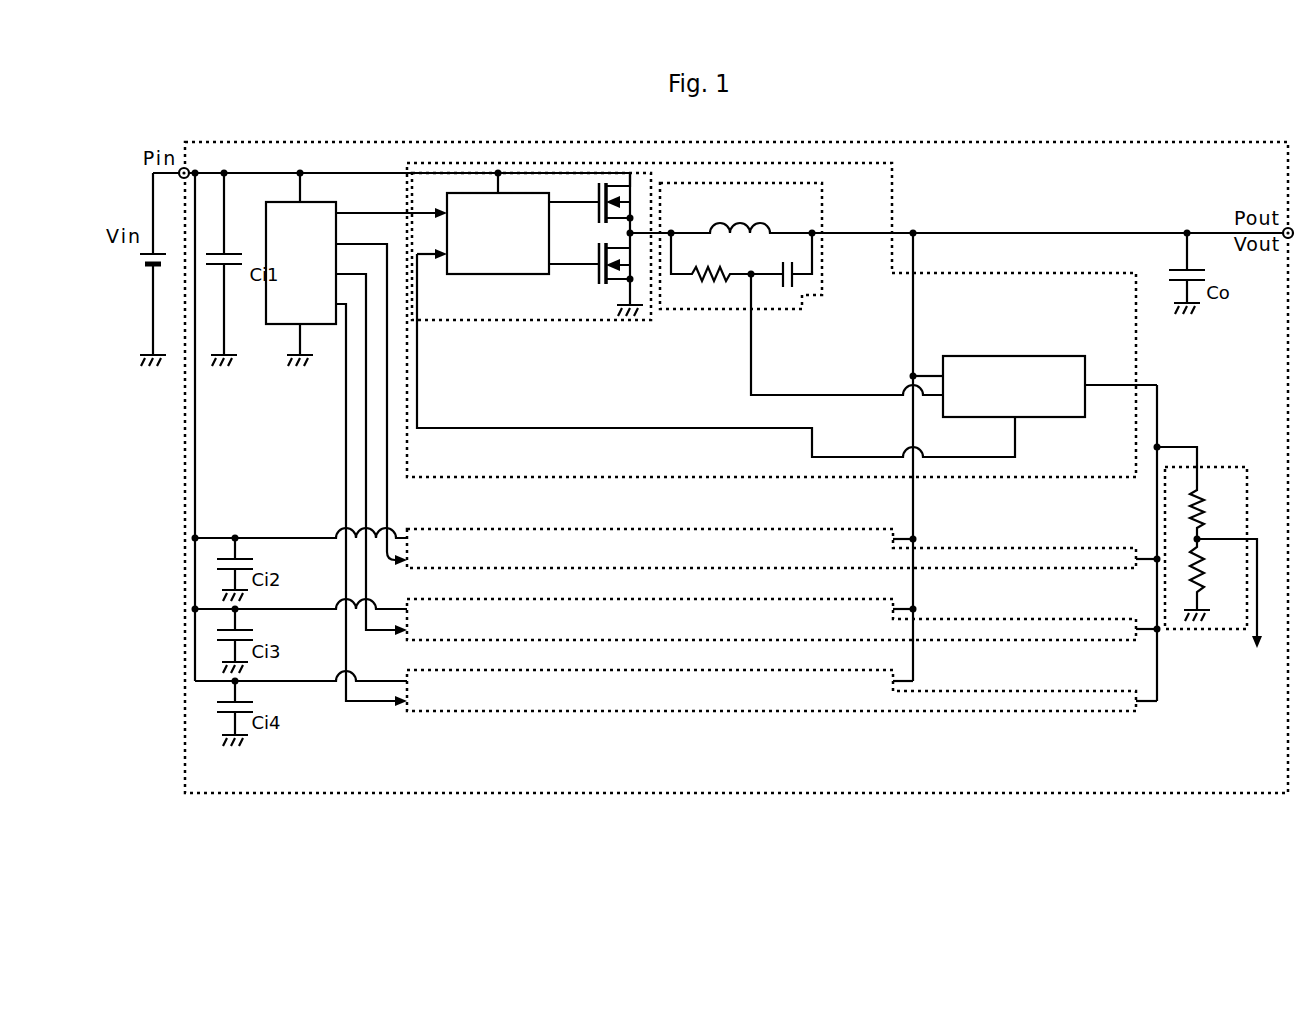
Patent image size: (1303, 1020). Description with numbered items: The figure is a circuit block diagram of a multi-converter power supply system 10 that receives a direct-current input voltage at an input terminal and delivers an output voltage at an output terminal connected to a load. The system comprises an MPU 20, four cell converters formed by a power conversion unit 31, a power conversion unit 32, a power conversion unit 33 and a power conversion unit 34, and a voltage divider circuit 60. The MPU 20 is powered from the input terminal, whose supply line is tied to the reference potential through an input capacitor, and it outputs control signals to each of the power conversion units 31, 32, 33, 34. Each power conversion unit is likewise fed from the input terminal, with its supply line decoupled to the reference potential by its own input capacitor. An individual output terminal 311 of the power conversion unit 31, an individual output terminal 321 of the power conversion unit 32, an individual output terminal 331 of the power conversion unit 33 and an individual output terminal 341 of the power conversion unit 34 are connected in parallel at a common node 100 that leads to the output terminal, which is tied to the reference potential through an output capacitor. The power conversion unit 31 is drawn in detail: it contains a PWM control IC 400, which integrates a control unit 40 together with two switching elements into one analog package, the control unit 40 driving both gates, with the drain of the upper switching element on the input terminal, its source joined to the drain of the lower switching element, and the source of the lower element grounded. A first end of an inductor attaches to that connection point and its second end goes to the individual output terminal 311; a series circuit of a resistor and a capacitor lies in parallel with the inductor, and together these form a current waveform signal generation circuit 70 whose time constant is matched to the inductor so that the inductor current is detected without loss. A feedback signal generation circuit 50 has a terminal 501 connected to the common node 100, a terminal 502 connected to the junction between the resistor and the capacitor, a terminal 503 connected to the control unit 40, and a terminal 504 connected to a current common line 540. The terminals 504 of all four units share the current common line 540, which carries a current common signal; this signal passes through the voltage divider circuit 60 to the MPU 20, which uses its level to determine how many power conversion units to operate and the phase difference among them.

The multi-converter power supply system 10 is at (1248, 142).
The MPU 20 is at (278, 324).
The power conversion unit 31 is at (1104, 273).
The power conversion unit 32 is at (782, 534).
The power conversion unit 33 is at (782, 606).
The power conversion unit 34 is at (782, 677).
The control unit 40 is at (530, 274).
The PWM control IC 400 is at (531, 268).
The current waveform signal generation circuit 70 is at (683, 310).
The common node 100 is at (913, 263).
The individual output terminal 311 is at (897, 228).
The individual output terminal 321 is at (900, 528).
The individual output terminal 331 is at (900, 599).
The individual output terminal 341 is at (900, 671).
The feedback signal generation circuit 50 is at (1058, 417).
The terminal 501 is at (936, 366).
The terminal 502 is at (939, 404).
The terminal 503 is at (1020, 430).
The terminal 504 is at (1095, 380).
The current common line 540 is at (1160, 393).
The voltage divider circuit 60 is at (1200, 631).